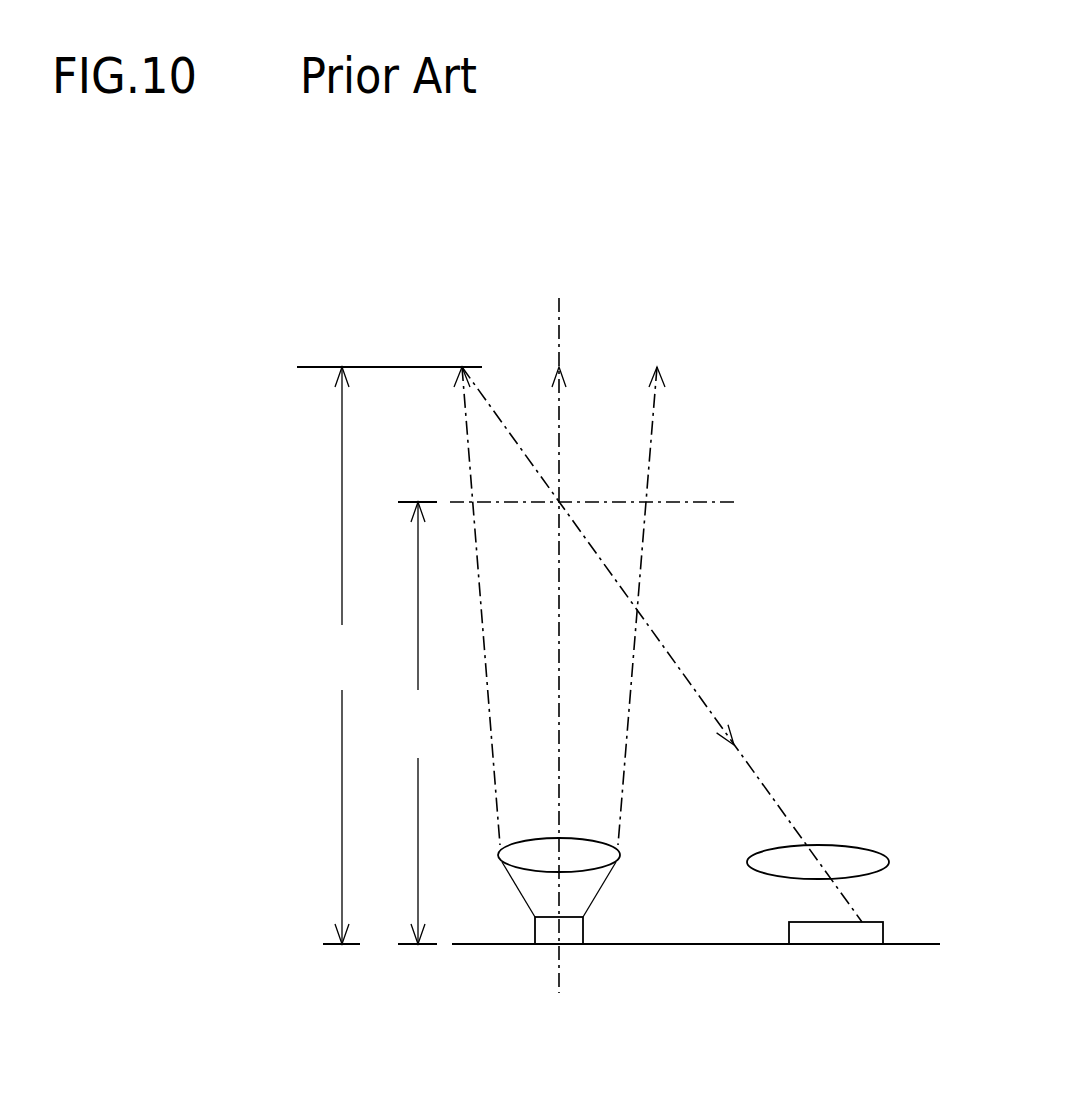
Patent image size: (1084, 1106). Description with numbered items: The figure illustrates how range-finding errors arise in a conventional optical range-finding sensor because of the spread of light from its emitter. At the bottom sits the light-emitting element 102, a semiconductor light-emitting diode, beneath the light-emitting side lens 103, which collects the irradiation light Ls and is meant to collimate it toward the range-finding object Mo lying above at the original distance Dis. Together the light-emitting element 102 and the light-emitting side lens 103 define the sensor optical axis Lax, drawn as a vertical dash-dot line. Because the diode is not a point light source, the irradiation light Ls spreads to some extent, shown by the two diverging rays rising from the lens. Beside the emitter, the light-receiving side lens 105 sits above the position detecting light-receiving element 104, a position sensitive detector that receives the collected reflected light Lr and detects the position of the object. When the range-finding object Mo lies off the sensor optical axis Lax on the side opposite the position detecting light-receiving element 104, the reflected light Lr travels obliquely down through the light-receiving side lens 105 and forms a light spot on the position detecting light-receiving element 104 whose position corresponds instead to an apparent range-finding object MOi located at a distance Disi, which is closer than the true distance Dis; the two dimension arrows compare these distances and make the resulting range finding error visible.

The light-emitting element 102 is at (577, 930).
The light-emitting side lens 103 is at (530, 862).
The position detecting light-receiving element 104 is at (830, 935).
The light-receiving side lens 105 is at (852, 858).
The range-finding object Mo is at (355, 364).
The range-finding object (apparent position) MOi is at (608, 497).
The sensor optical axis Lax is at (559, 347).
The irradiation light Ls is at (470, 467).
The reflected light Lr is at (677, 662).
The distance Dis is at (339, 655).
The distance Disi is at (414, 723).